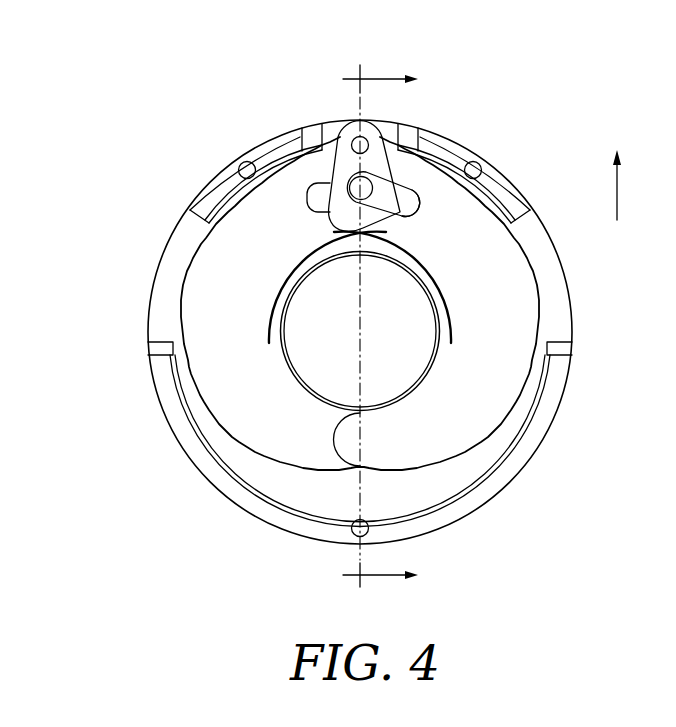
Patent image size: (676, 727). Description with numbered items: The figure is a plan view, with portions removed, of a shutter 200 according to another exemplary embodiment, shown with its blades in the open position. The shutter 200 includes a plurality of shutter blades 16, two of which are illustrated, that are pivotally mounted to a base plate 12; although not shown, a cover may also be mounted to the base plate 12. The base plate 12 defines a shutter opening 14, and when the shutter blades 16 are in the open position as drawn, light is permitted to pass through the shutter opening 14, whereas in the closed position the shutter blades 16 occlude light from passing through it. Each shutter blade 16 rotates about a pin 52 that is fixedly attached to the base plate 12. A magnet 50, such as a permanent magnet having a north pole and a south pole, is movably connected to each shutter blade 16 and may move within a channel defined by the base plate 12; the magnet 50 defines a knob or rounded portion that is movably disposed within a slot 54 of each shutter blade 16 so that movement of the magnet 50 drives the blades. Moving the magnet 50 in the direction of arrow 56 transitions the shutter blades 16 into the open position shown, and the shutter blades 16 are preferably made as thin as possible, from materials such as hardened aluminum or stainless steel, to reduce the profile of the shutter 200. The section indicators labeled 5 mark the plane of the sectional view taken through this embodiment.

The shutter 200 is at (198, 128).
The base plate 12 is at (566, 280).
The shutter opening 14 is at (314, 269).
The shutter blades 16 is at (267, 414).
The magnet 50 is at (367, 172).
The pin 52 is at (343, 134).
The slot 54 is at (311, 192).
The arrow 56 is at (617, 199).
The section line 5 is at (380, 327).